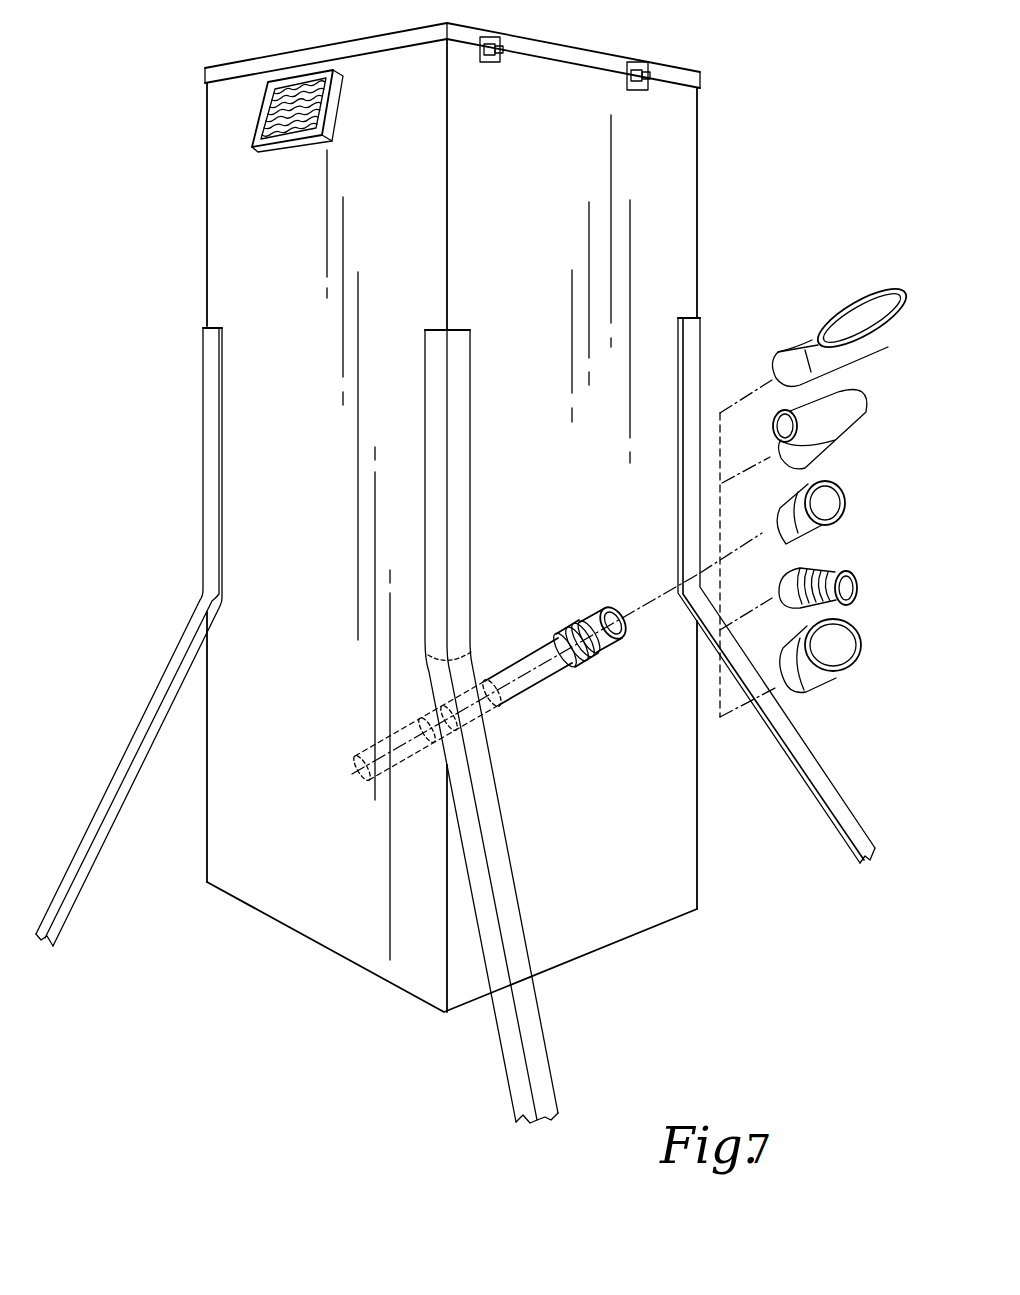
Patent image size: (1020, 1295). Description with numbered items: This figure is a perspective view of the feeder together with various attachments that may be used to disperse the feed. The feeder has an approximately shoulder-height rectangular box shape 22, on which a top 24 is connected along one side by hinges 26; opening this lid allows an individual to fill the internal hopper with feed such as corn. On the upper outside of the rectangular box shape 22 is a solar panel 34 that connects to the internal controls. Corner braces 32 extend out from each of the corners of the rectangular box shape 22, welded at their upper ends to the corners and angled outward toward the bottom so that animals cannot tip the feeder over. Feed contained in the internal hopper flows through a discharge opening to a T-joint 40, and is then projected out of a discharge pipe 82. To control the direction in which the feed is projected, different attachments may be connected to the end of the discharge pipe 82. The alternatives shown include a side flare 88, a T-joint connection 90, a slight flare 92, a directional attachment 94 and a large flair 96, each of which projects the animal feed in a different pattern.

The rectangular box shape 22 is at (452, 513).
The top 24 is at (563, 48).
The hinges 26 is at (502, 55).
The corner braces 32 is at (133, 742).
The solar panel 34 is at (302, 77).
The T-joint 40 is at (496, 722).
The discharge pipe 82 is at (581, 630).
The side flare 88 is at (826, 352).
The T-joint connection 90 is at (833, 437).
The slight flare 92 is at (826, 530).
The directional attachment 94 is at (832, 600).
The large flair 96 is at (833, 680).